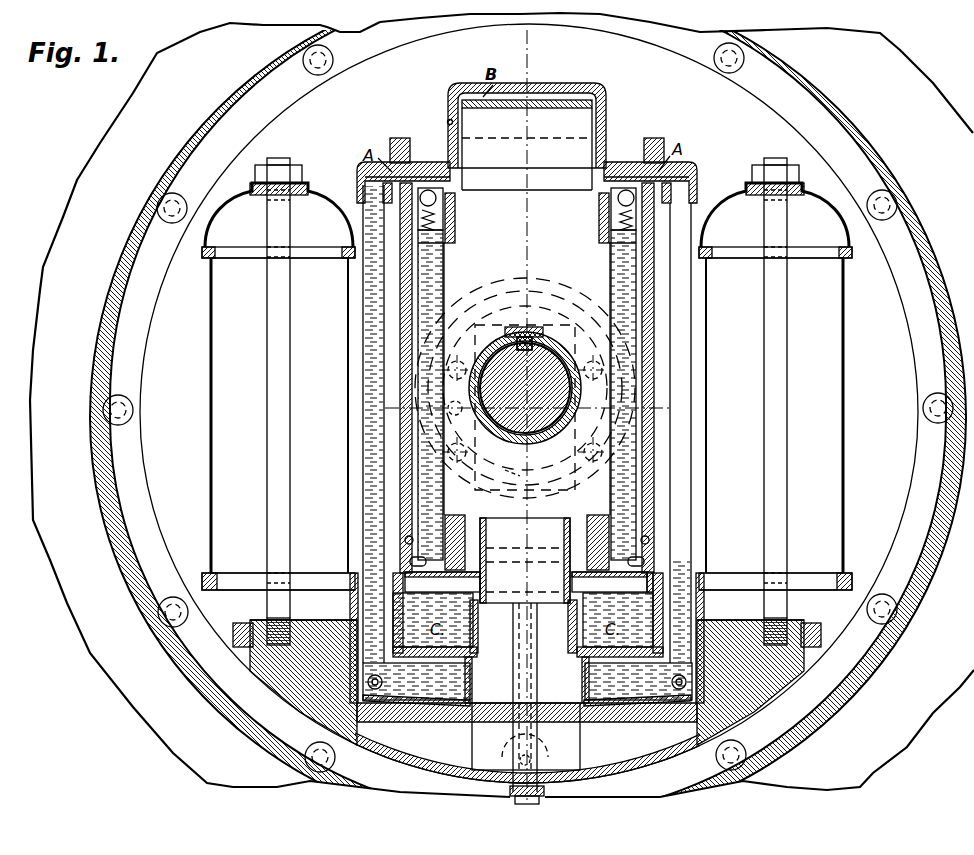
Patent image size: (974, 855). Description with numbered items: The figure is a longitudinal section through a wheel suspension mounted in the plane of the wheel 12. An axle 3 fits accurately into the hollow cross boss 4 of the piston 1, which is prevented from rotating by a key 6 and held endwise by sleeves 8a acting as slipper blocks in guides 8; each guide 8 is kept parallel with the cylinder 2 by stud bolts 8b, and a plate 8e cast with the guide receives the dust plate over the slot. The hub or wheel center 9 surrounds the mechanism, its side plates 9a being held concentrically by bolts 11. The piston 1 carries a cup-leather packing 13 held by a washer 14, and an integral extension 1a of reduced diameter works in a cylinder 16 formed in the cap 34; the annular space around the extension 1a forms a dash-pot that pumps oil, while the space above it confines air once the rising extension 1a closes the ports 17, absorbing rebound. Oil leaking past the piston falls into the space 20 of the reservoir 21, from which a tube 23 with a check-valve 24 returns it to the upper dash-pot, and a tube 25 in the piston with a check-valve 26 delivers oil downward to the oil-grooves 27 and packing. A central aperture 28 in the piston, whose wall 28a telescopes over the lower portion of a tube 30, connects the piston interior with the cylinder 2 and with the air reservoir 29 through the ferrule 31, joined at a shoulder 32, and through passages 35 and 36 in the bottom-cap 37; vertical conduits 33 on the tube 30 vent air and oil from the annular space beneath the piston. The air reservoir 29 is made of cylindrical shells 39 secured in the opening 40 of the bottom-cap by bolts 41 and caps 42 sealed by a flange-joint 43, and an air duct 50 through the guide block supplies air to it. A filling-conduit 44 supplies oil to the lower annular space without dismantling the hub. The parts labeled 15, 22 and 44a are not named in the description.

The piston 1 is at (446, 220).
The piston extension 1a is at (459, 157).
The cylinder 2 is at (401, 300).
The axle 3 is at (525, 402).
The hollow cross boss 4 is at (525, 395).
The key 6 is at (543, 339).
The guides 8 is at (476, 475).
The sleeves 8a is at (572, 327).
The stud bolts 8b is at (457, 406).
The plate or disk 8e is at (527, 468).
The hub 9 is at (228, 100).
The side plates 9a is at (529, 403).
The bolts 11 is at (718, 68).
The wheel 12 is at (502, 405).
The packing 13 is at (640, 582).
The washer 14 is at (609, 585).
The pin 15 is at (650, 540).
The cylinder 16 is at (600, 95).
The ports 17 is at (447, 122).
The space 20 is at (355, 600).
The reservoir 21 is at (433, 686).
The chamber 22 is at (466, 657).
The tube 23 is at (363, 366).
The check-valve 24 is at (392, 708).
The tube 25 is at (445, 265).
The check-valve 26 is at (448, 196).
The oil-grooves 27 is at (652, 558).
The aperture 28 is at (487, 547).
The wall of aperture 28a is at (475, 516).
The air reservoir 29 is at (527, 415).
The tube 30 is at (442, 584).
The ferrule 31 is at (489, 573).
The shoulder 32 is at (567, 600).
The vertical conduits 33 is at (479, 628).
The cap 34 is at (400, 142).
The passage 35 is at (700, 713).
The passage 36 is at (665, 640).
The bottom-cap 37 is at (608, 762).
The cylindrical shells 39 is at (213, 298).
The opening 40 is at (527, 610).
The bolts 41 is at (281, 335).
The caps 42 is at (210, 230).
The flange-joint 43 is at (216, 253).
The filling-conduit 44 is at (533, 732).
The stem nut 44a is at (510, 789).
The air duct 50 is at (459, 400).